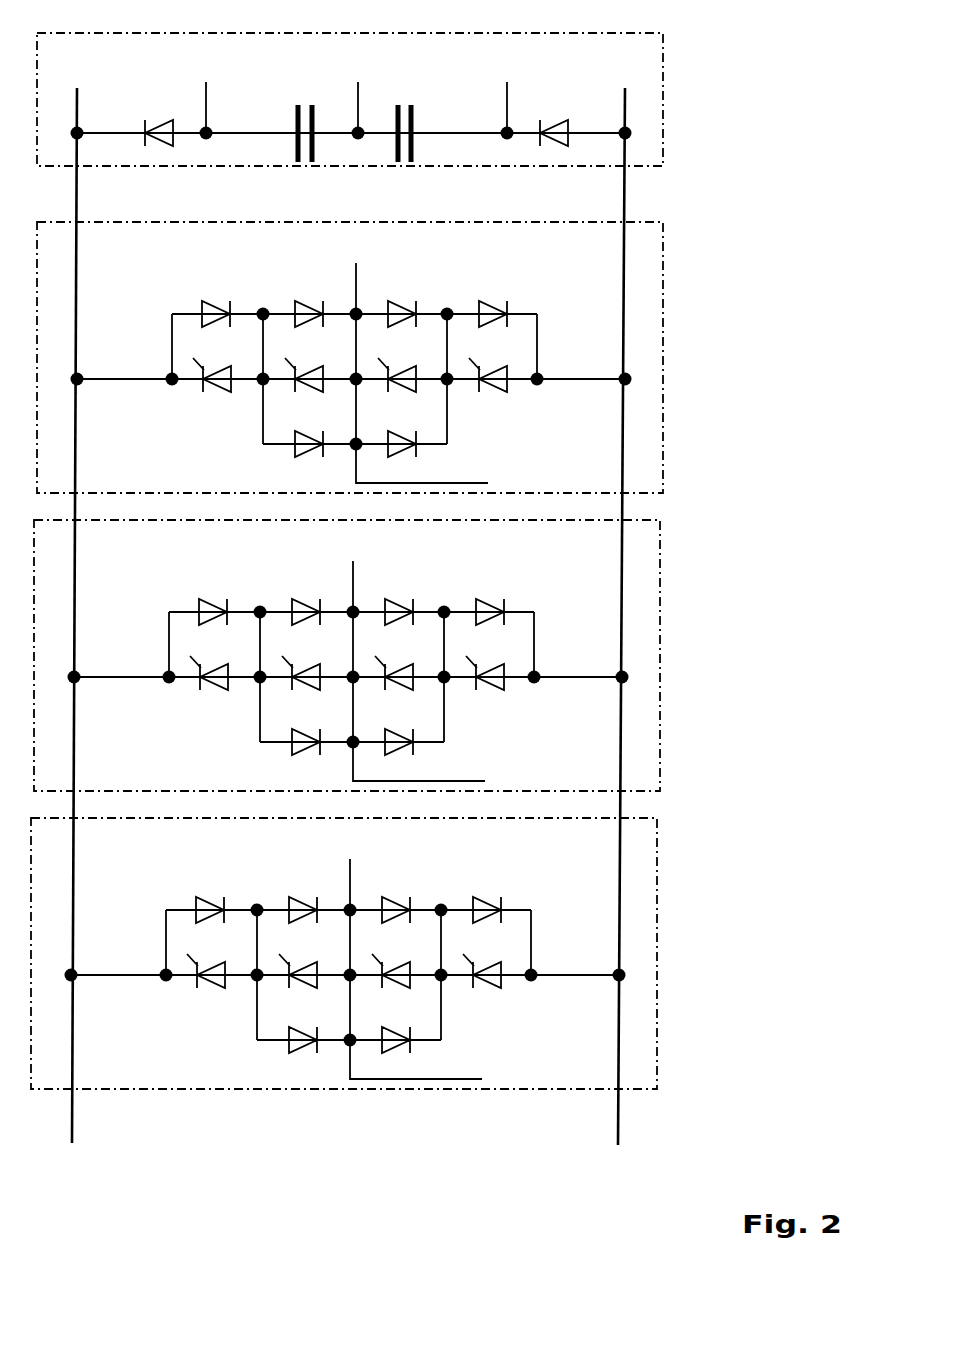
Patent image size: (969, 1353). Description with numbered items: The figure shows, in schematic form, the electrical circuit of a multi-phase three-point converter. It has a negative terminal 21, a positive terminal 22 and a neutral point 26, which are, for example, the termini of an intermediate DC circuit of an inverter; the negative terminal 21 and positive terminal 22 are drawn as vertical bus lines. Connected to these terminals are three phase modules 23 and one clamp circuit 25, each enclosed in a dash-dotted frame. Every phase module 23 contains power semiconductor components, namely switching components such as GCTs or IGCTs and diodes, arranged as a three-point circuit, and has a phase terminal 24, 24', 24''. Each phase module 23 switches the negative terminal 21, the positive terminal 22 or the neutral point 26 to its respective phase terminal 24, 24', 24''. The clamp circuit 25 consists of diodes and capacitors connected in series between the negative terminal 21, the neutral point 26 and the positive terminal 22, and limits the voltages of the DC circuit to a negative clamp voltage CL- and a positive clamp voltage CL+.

The negative terminal 21 is at (77, 182).
The positive terminal 22 is at (625, 190).
The phase module 23 is at (665, 292).
The phase terminal 24 is at (457, 463).
The phase terminal 24' is at (457, 761).
The phase terminal 24'' is at (457, 1059).
The clamp circuit 25 is at (665, 62).
The neutral point 26 is at (356, 124).